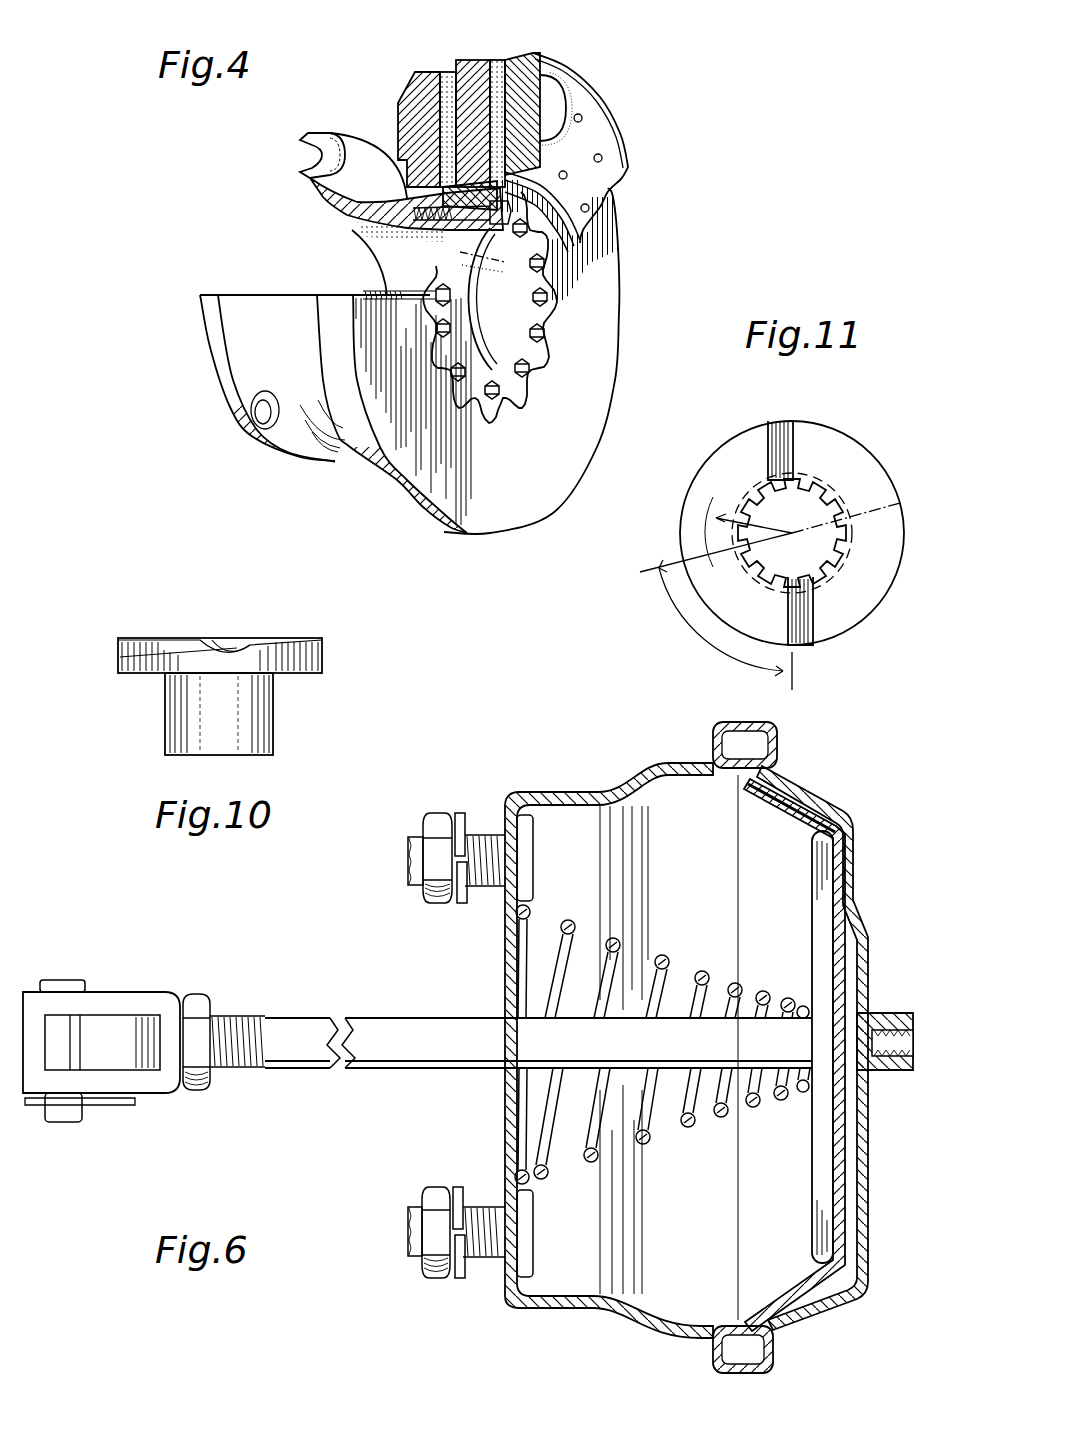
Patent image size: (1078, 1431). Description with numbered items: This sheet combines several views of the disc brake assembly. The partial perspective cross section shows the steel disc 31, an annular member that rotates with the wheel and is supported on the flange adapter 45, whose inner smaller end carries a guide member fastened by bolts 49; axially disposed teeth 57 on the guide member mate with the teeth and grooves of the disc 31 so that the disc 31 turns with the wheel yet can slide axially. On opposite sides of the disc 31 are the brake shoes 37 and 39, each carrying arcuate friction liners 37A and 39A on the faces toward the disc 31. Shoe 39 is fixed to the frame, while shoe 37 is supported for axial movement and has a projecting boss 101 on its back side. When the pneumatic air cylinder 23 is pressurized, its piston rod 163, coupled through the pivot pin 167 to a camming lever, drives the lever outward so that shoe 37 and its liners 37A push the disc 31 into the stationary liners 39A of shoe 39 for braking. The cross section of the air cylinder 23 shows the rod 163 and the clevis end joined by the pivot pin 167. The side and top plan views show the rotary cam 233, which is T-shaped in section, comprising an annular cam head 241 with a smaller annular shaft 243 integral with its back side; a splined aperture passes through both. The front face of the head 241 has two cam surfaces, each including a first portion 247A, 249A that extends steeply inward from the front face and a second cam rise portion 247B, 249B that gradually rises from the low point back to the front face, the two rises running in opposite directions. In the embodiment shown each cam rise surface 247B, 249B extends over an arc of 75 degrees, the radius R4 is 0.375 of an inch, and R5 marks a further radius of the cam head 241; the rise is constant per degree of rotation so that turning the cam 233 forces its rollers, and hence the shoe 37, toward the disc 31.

In FIG. 6, the pneumatic air cylinder 23 is at (562, 792).
In FIG. 4, the disc 31 is at (492, 535).
In FIG. 4, the brake shoe 37 is at (628, 148).
In FIG. 4, the friction liner 37A is at (498, 60).
In FIG. 4, the brake shoe 39 is at (420, 95).
In FIG. 4, the friction liner 39A is at (447, 70).
In FIG. 4, the flange adapter 45 is at (320, 195).
In FIG. 4, the bolts 49 is at (547, 297).
In FIG. 4, the teeth 57 is at (540, 320).
In FIG. 4, the boss 101 is at (553, 110).
In FIG. 6, the piston rod 163 is at (420, 1018).
In FIG. 6, the pivot pin 167 is at (62, 980).
In FIG. 11, the rotary cam 233 is at (855, 622).
In FIG. 10, the rotary cam 233 is at (223, 691).
In FIG. 10, the cam head 241 is at (118, 660).
In FIG. 10, the shaft 243 is at (275, 740).
In FIG. 11, the first portion of cam surface 247A is at (785, 420).
In FIG. 11, the cam rise portion 247B is at (853, 478).
In FIG. 11, the first portion of cam surface 249A is at (803, 648).
In FIG. 11, the cam rise portion 249B is at (712, 572).
In FIG. 10, the radius R4 is at (226, 640).
In FIG. 11, the radius dimension R5 is at (720, 512).
In FIG. 11, the arc of cam rise surface 75 is at (725, 625).